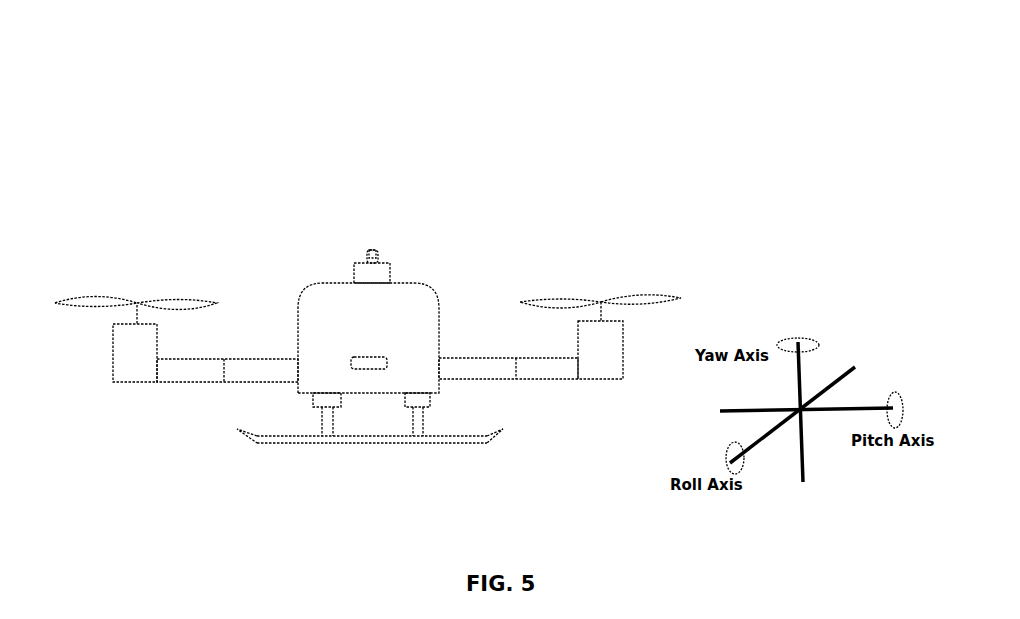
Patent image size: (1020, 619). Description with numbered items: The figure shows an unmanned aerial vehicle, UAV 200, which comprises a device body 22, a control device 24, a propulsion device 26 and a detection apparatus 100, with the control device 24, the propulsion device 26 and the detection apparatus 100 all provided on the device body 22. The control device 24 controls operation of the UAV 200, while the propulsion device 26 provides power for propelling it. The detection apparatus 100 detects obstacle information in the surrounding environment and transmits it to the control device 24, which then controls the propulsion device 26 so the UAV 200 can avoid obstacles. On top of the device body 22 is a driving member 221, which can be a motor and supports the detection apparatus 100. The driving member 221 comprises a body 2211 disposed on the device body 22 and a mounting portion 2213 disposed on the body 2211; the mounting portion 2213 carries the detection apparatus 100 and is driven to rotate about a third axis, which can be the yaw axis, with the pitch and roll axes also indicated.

The UAV 200 is at (486, 69).
The device body 22 is at (437, 312).
The control device 24 is at (351, 360).
The propulsion device 26 is at (611, 266).
The detection apparatus 100 is at (367, 255).
The driving member 221 is at (469, 212).
The body 2211 is at (390, 268).
The mounting portion 2213 is at (378, 258).